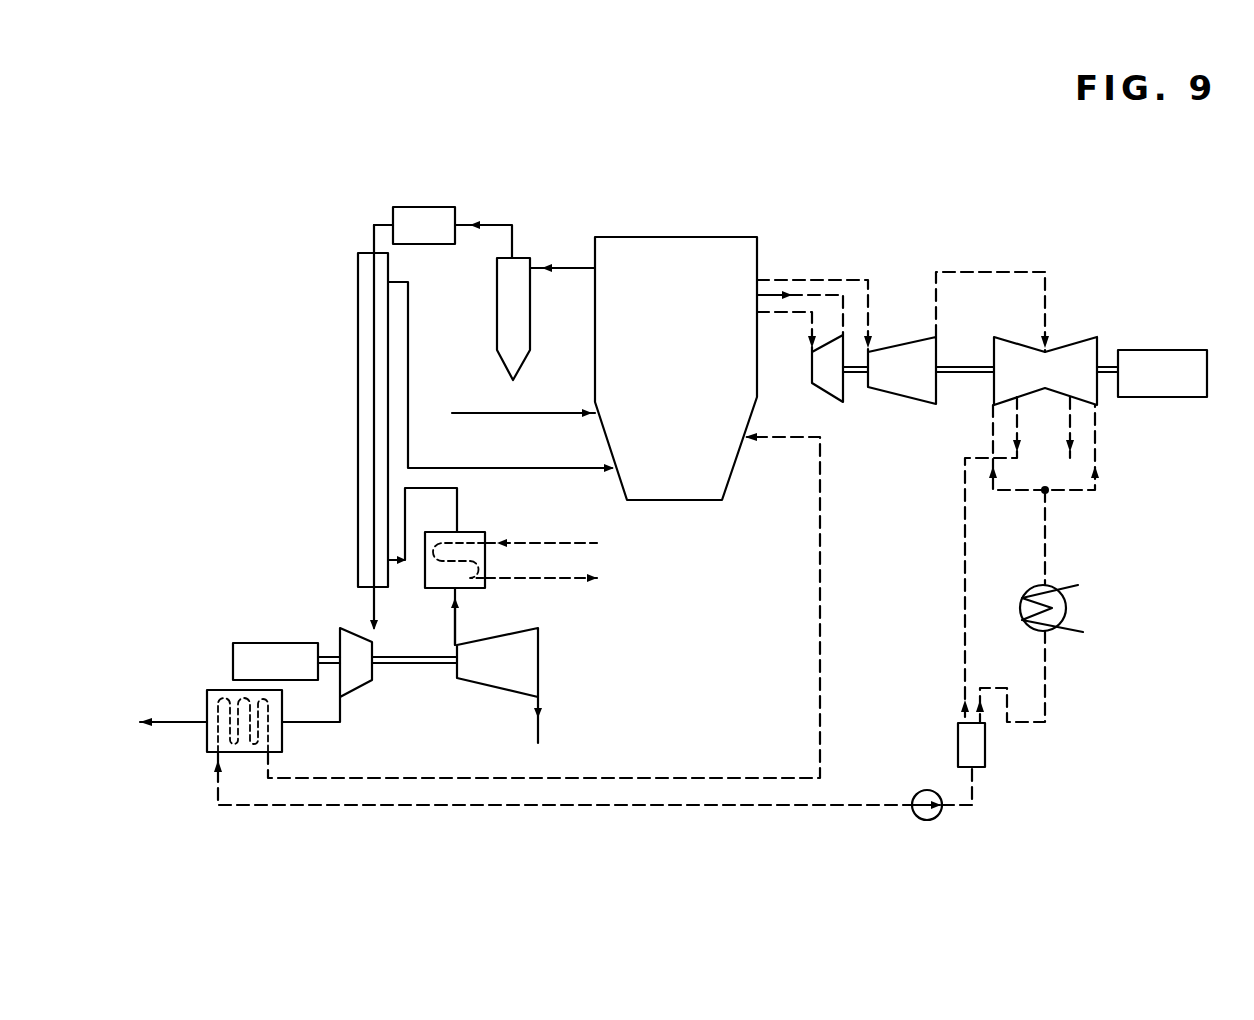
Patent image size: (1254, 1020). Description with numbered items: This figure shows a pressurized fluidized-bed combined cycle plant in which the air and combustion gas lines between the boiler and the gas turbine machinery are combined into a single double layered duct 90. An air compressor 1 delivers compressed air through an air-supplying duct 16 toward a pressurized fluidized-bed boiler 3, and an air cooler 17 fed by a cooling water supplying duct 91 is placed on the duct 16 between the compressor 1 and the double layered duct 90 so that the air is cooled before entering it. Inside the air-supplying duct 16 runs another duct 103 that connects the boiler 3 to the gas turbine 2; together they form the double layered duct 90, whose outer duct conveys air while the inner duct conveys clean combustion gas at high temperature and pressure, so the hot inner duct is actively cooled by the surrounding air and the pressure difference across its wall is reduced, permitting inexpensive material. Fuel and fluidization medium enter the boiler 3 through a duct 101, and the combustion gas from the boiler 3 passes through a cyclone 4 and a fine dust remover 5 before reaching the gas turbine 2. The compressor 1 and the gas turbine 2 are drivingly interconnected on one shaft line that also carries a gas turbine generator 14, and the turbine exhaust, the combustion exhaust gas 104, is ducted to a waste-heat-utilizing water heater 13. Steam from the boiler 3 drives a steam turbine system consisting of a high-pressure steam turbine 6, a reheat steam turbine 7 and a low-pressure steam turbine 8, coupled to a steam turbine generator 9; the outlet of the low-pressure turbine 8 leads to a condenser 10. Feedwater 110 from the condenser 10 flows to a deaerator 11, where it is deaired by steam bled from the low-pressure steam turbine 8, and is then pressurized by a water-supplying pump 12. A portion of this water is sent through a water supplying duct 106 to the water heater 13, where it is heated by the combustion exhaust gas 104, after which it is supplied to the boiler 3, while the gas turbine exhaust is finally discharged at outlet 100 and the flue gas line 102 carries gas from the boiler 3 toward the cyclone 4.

The air compressor 1 is at (497, 690).
The gas turbine 2 is at (345, 632).
The pressurized fluidized-bed boiler 3 is at (748, 250).
The cyclone 4 is at (497, 305).
The fine dust remover 5 is at (423, 207).
The high-pressure steam turbine 6 is at (836, 403).
The reheat steam turbine 7 is at (902, 340).
The low-pressure steam turbine 8 is at (1078, 340).
The steam turbine generator 9 is at (1160, 350).
The condenser 10 is at (1068, 612).
The deaerator 11 is at (985, 755).
The water-supplying pump 12 is at (927, 822).
The waste-heat-utilizing water heater 13 is at (207, 700).
The gas turbine generator 14 is at (278, 643).
The air-supplying duct 16 is at (455, 618).
The air cooler 17 is at (470, 532).
The double layered duct 90 is at (358, 402).
The cooling water supplying duct 91 is at (560, 543).
The exhaust outlet 100 is at (540, 733).
The duct 101 is at (482, 413).
The flue gas line 102 is at (550, 268).
The duct 103 is at (374, 235).
The combustion exhaust gas 104 is at (342, 712).
The water supplying duct 106 is at (878, 805).
The feedwater 110 is at (1045, 672).